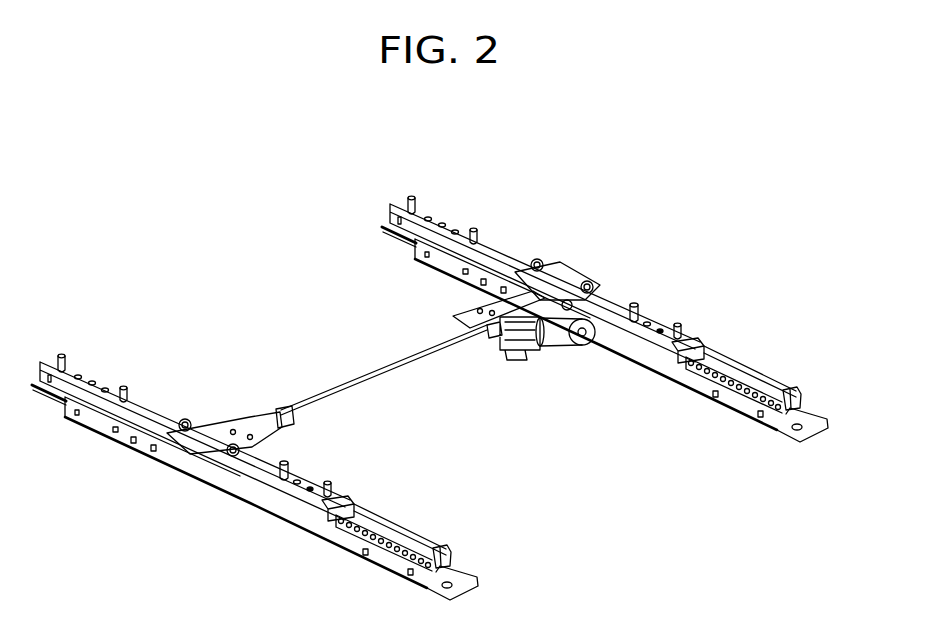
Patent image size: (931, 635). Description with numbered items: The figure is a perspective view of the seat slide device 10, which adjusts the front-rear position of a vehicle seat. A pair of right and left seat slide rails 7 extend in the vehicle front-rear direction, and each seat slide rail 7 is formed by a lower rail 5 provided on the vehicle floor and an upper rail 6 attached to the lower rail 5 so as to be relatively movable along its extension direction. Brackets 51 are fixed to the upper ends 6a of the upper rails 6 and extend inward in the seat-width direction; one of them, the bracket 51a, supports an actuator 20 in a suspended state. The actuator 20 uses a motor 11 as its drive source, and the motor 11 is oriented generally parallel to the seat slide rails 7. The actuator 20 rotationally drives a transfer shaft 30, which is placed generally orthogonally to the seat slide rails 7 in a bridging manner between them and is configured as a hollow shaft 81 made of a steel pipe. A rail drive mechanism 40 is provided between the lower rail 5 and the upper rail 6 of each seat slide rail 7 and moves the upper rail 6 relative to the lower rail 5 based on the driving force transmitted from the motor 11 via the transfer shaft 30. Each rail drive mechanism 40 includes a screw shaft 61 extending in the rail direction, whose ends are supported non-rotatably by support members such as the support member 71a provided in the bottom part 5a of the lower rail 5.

The seat slide device 10 is at (158, 202).
The seat slide rail 7 is at (433, 378).
The lower rail 5 is at (348, 553).
The upper rail 6 is at (45, 361).
The upper end of the upper rail 6a is at (150, 408).
The bottom part of the lower rail 5a is at (470, 587).
The screw shaft 61 is at (373, 518).
The rail drive mechanism 40 is at (560, 444).
The support member 71a is at (430, 550).
The bracket 51 is at (230, 422).
The bracket 51a is at (470, 303).
The transfer shaft 30 is at (382, 370).
The hollow shaft 81 is at (377, 363).
The actuator 20 is at (592, 375).
The motor 11 is at (562, 343).